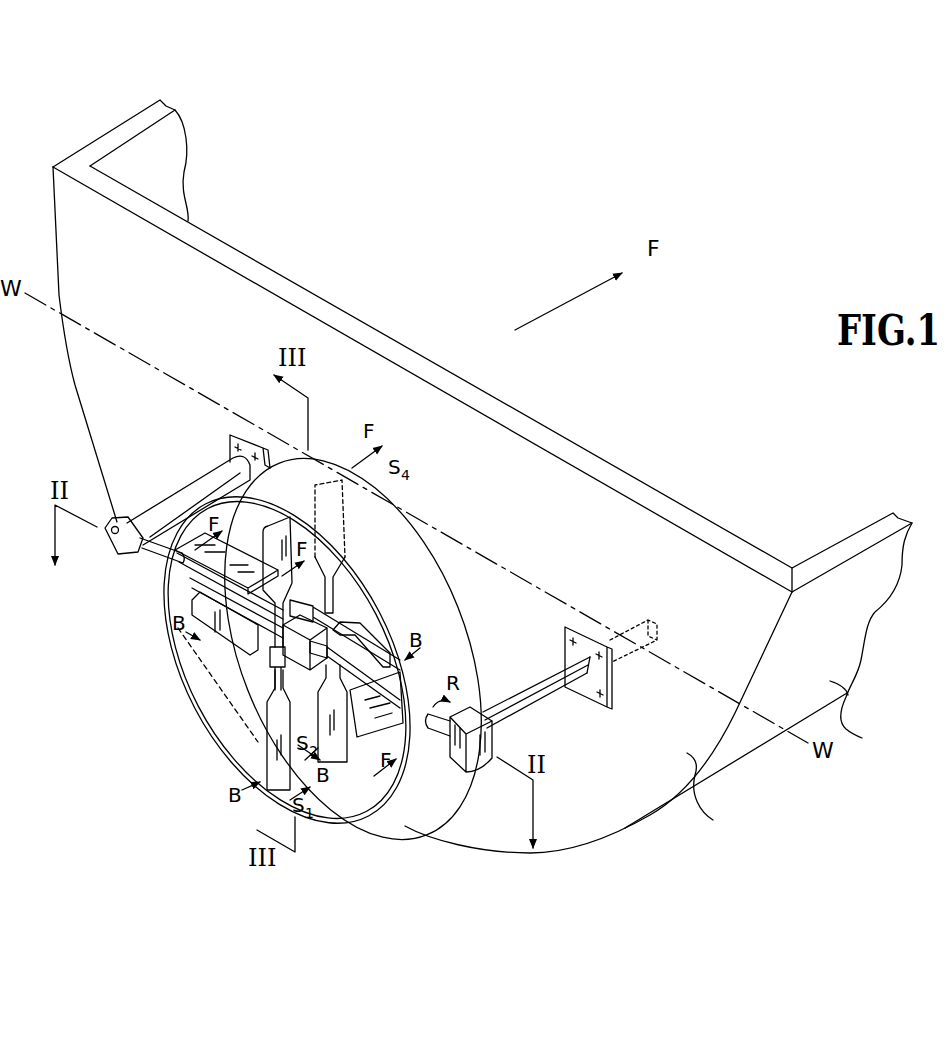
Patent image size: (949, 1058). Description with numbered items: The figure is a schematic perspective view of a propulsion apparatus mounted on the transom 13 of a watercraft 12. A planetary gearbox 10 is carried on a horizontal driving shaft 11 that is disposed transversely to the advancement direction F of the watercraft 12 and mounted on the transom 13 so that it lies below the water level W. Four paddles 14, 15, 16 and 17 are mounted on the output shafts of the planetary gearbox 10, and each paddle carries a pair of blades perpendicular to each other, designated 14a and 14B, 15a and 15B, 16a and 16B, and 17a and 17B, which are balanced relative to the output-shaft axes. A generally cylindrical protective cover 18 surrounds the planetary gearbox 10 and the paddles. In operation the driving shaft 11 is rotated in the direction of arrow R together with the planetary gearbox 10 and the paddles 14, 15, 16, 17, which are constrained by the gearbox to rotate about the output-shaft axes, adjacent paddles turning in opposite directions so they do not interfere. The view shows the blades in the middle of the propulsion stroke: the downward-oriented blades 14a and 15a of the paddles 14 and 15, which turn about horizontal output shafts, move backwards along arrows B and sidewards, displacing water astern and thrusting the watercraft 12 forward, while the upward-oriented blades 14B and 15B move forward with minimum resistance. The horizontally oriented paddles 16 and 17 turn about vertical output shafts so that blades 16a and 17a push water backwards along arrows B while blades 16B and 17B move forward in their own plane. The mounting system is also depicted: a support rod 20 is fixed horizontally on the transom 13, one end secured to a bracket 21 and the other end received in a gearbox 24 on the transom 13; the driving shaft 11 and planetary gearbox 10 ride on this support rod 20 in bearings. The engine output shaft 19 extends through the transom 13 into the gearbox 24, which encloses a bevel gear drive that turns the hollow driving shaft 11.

The planetary gearbox 10 is at (270, 730).
The horizontal driving shaft 11 is at (430, 767).
The watercraft 12 is at (468, 464).
The transom 13 is at (598, 722).
The paddle 14 is at (280, 668).
The blade 14a is at (270, 730).
The blade 14B is at (205, 600).
The paddle 15 is at (337, 588).
The blade 15a is at (347, 773).
The blade 15B is at (327, 562).
The paddle 16 is at (273, 662).
The blade 16a is at (250, 614).
The blade 16B is at (403, 807).
The paddle 17 is at (318, 609).
The blade 17a is at (345, 628).
The blade 17B is at (190, 580).
The protective cover 18 is at (313, 460).
The engine output shaft 19 is at (658, 630).
The support rod 20 is at (143, 553).
The bracket 21 is at (195, 490).
The gearbox 24 is at (480, 770).